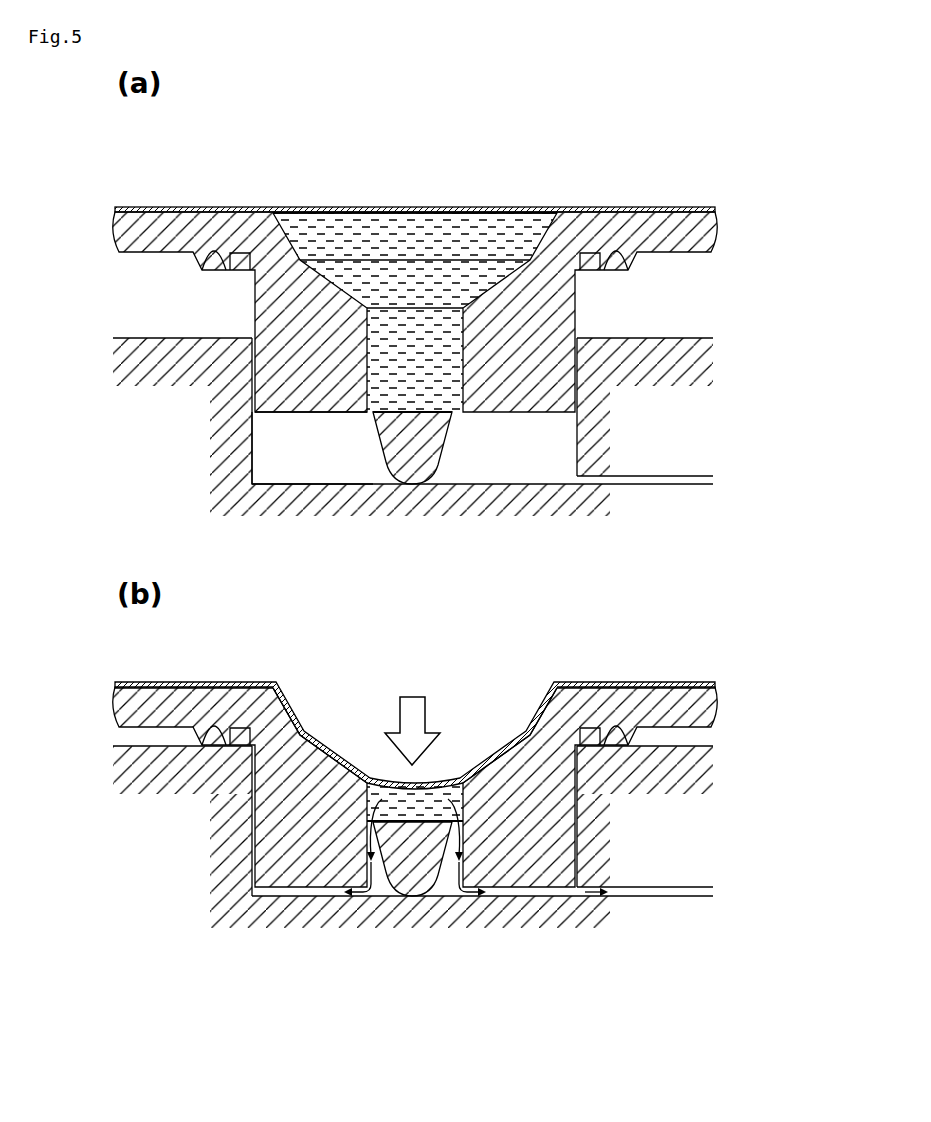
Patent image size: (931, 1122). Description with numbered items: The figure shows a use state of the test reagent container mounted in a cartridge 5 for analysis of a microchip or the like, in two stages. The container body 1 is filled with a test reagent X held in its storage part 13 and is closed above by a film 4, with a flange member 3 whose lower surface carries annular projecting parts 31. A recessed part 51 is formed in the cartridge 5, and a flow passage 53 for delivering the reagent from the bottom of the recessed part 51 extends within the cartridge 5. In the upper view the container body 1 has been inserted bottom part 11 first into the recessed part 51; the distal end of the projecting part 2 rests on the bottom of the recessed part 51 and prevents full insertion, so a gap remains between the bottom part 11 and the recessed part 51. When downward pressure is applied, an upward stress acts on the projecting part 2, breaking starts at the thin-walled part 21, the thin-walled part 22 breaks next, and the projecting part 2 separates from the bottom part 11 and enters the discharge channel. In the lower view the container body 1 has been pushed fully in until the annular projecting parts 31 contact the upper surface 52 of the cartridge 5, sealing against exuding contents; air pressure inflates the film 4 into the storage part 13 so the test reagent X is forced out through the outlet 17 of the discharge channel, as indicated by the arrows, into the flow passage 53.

The container body 1 is at (580, 314).
The projecting part 2 is at (382, 465).
The flange member 3 is at (688, 232).
The film 4 is at (497, 752).
The cartridge 5 is at (620, 425).
The bottom part 11 is at (295, 413).
The storage part 13 is at (372, 235).
The outlet of the discharge channel 17 is at (447, 897).
The thin-walled part 21 is at (455, 415).
The thin-walled part 22 is at (327, 482).
The annular projecting parts 31 is at (648, 735).
The recessed part 51 is at (520, 480).
The upper surface of the cartridge 52 is at (157, 338).
The flow passage 53 is at (643, 480).
The test reagent X is at (503, 228).